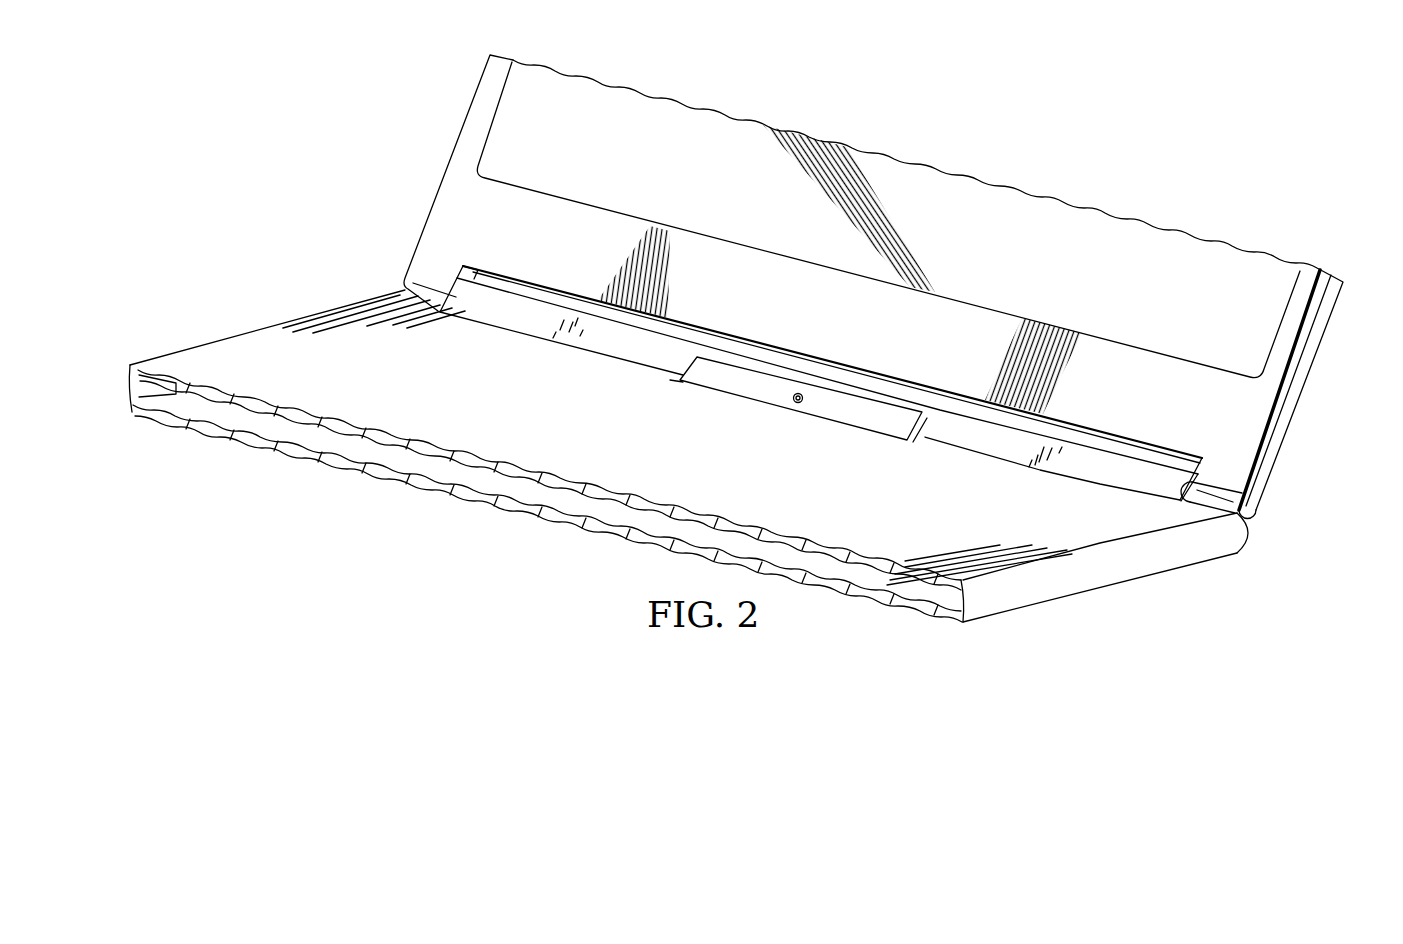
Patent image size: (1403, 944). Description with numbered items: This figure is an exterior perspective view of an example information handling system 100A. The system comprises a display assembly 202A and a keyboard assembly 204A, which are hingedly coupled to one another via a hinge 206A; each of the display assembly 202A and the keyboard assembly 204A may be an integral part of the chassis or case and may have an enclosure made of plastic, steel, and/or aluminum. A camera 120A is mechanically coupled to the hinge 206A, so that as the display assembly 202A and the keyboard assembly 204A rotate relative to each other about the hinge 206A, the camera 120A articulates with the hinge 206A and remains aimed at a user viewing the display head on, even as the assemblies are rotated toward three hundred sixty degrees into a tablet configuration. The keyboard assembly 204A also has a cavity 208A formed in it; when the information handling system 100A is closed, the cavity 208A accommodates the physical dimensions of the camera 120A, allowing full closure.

The information handling system 100A is at (229, 160).
The display assembly 202A is at (1292, 388).
The keyboard assembly 204A is at (1112, 575).
The hinge 206A is at (1114, 473).
The cavity 208A is at (734, 394).
The camera 120A is at (791, 398).